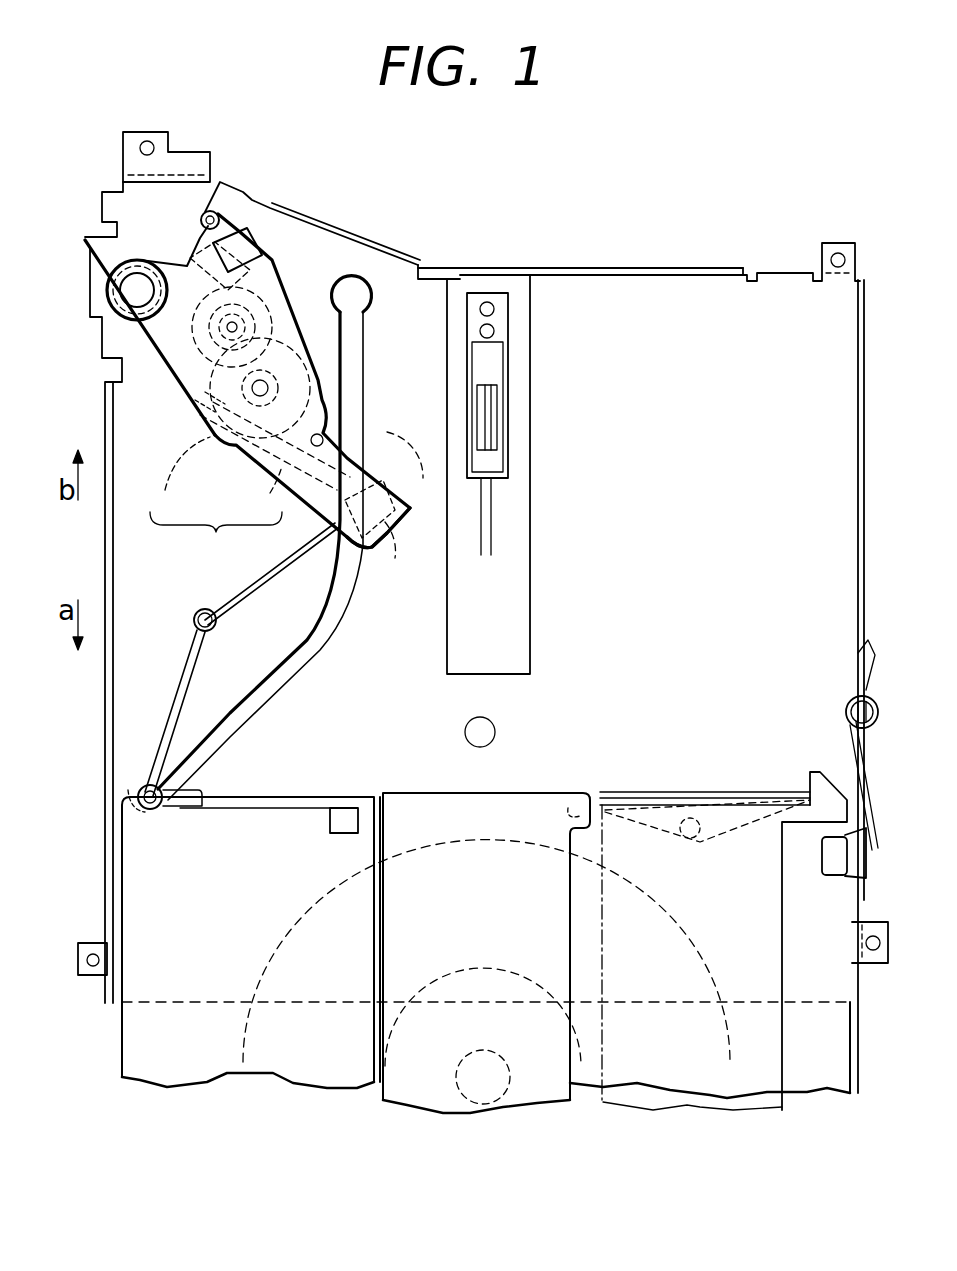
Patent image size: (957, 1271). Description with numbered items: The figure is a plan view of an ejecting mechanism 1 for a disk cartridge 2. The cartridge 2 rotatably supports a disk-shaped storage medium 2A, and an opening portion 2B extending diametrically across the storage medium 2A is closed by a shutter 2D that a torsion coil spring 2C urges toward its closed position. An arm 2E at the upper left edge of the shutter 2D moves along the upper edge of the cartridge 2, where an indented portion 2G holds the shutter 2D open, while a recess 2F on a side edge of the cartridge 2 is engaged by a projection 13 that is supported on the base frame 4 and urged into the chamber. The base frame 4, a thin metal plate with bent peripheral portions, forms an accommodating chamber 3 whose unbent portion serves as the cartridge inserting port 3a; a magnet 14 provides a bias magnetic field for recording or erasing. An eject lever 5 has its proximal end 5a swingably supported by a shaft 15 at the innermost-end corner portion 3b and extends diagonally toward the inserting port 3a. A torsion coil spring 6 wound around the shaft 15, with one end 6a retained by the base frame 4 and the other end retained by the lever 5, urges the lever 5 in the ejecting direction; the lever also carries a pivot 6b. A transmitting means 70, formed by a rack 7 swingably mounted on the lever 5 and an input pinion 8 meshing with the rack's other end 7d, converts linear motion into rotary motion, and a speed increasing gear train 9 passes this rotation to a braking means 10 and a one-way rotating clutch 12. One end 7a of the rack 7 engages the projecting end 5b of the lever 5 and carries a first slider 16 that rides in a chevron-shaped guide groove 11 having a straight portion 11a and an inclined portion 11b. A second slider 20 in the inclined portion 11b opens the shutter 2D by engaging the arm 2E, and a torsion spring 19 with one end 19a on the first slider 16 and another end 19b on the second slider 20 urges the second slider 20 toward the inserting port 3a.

The ejecting mechanism 1 is at (362, 232).
The disk cartridge 2 is at (353, 1112).
The storage medium 2A is at (313, 910).
The opening portion 2B is at (380, 994).
The torsion coil spring 2C is at (637, 823).
The shutter 2D is at (520, 803).
The arm 2E is at (292, 795).
The recess 2F is at (830, 873).
The indented portion 2G is at (343, 812).
The accommodating chamber 3 is at (755, 300).
The cartridge inserting port 3a is at (177, 1007).
The innermost-end corner portion 3b is at (137, 227).
The base frame 4 is at (602, 268).
The eject lever 5 is at (208, 440).
The proximal end 5a is at (163, 266).
The projecting end 5b is at (373, 473).
The torsion coil spring 6 is at (90, 337).
The one end of torsion coil spring 6a is at (90, 240).
The lever pivot 6b is at (212, 223).
The rack 7 is at (237, 431).
The one end of rack 7a is at (393, 540).
The another end of rack 7d is at (197, 403).
The input pinion 8 is at (164, 508).
The speed increasing gear train 9 is at (180, 368).
The braking means 10 is at (262, 282).
The guide groove 11 is at (358, 365).
The straight portion 11a is at (353, 328).
The inclined portion 11b is at (298, 662).
The one-way rotating clutch 12 is at (290, 298).
The projection 13 is at (860, 870).
The magnet 14 is at (522, 486).
The shaft 15 is at (133, 293).
The first slider 16 is at (413, 495).
The torsion spring 19 is at (195, 610).
The one end of torsion spring 19a is at (357, 590).
The another end of torsion spring 19b is at (140, 787).
The second slider 20 is at (200, 767).
The transmitting means 70 is at (216, 539).